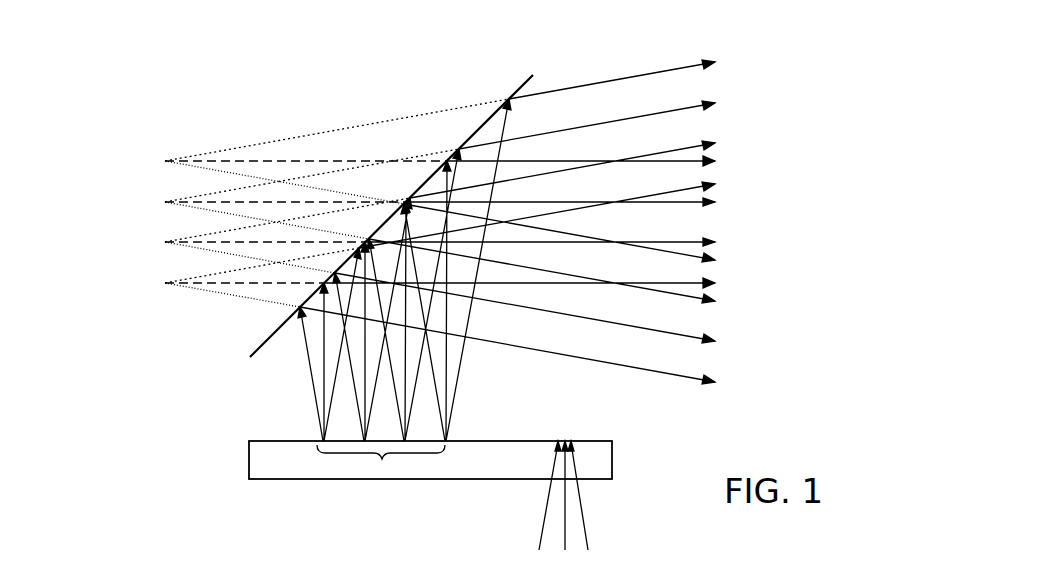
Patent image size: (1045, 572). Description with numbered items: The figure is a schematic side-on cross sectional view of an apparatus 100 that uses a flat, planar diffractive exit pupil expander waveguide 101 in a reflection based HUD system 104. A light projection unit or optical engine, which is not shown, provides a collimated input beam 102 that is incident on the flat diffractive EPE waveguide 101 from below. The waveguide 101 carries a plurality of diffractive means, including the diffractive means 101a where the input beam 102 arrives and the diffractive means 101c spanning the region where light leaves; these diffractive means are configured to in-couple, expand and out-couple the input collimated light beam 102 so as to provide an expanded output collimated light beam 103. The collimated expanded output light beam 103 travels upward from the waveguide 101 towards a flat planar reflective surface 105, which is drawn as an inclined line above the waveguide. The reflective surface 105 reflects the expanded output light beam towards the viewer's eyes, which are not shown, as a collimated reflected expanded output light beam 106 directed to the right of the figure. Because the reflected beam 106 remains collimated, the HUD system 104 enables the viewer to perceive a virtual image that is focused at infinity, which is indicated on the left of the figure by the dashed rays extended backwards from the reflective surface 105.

The apparatus 100 is at (202, 458).
The flat diffractive EPE waveguide 101 is at (603, 463).
The diffractive means 101a is at (547, 434).
The diffractive means 101c is at (380, 460).
The collimated input beam 102 is at (595, 530).
The expanded output collimated light beam 103 is at (293, 403).
The HUD system 104 is at (298, 87).
The flat planar reflective surface 105 is at (262, 345).
The collimated reflected expanded output light beam 106 is at (652, 62).